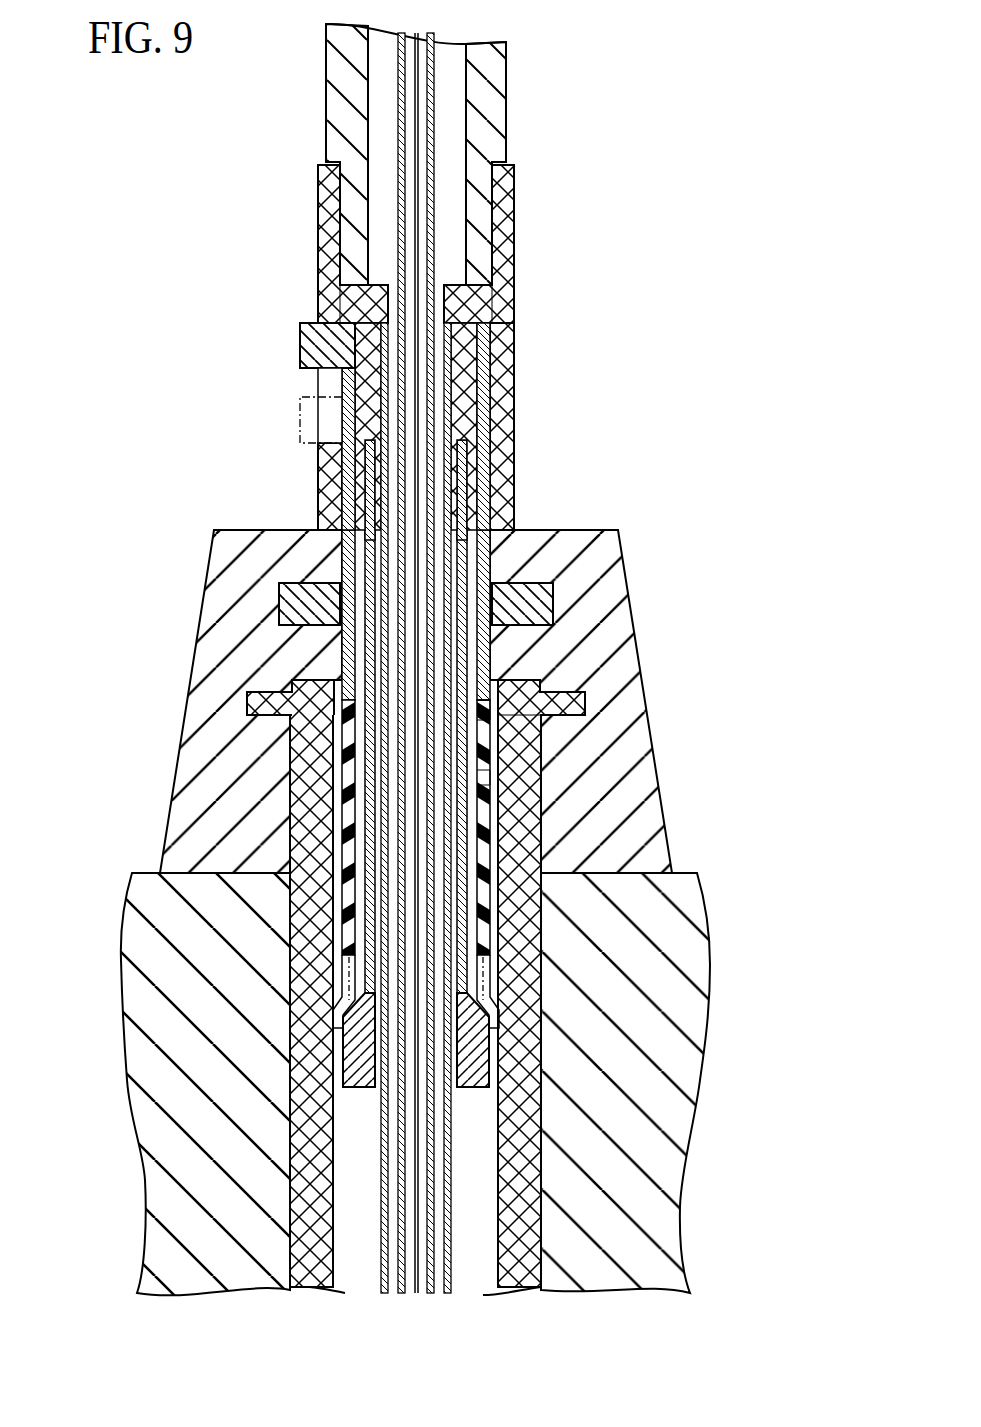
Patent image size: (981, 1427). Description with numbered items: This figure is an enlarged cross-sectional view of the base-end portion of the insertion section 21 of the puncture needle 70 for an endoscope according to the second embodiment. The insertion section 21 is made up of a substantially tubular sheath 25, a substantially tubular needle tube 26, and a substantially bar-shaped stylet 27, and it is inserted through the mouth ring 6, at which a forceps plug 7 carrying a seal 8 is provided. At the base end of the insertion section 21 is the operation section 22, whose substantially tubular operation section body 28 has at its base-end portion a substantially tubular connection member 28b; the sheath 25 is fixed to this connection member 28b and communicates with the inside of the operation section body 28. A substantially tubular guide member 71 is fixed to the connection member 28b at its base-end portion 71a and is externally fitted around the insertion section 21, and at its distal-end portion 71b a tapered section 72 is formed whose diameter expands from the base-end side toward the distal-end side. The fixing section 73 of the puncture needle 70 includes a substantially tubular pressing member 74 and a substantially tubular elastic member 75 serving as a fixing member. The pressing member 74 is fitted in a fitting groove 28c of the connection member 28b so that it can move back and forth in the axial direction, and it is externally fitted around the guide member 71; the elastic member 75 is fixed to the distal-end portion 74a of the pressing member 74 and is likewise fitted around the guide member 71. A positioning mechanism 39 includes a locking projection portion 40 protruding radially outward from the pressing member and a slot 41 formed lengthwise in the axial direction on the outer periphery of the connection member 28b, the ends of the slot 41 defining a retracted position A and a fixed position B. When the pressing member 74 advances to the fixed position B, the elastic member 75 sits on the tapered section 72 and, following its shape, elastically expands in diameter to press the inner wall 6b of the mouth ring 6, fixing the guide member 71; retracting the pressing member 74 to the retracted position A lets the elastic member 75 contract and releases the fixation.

The puncture needle 70 is at (690, 76).
The operation section 22 is at (505, 72).
The operation section body 28 is at (500, 130).
The needle tube 26 is at (437, 163).
The stylet 27 is at (418, 228).
The connection member 28b is at (505, 325).
The fitting groove 28c is at (483, 388).
The base-end portion 71a is at (465, 462).
The positioning mechanism 39 is at (147, 362).
The locking projection portion 40 is at (300, 347).
The slot 41 is at (320, 390).
The seal 8 is at (550, 612).
The forceps plug 7 is at (617, 650).
The distal-end portion 74a is at (490, 700).
The fixing section 73 is at (98, 662).
The pressing member 74 is at (330, 668).
The elastic member 75 is at (347, 737).
The retracted position A is at (487, 715).
The fixed position B is at (483, 775).
The mouth ring 6 is at (520, 840).
The guide member 71 is at (574, 753).
The distal-end portion 71b is at (500, 1035).
The tapered section 72 is at (352, 1053).
The inner wall 6b is at (333, 1210).
The sheath 25 is at (447, 1218).
The insertion section 21 is at (576, 663).